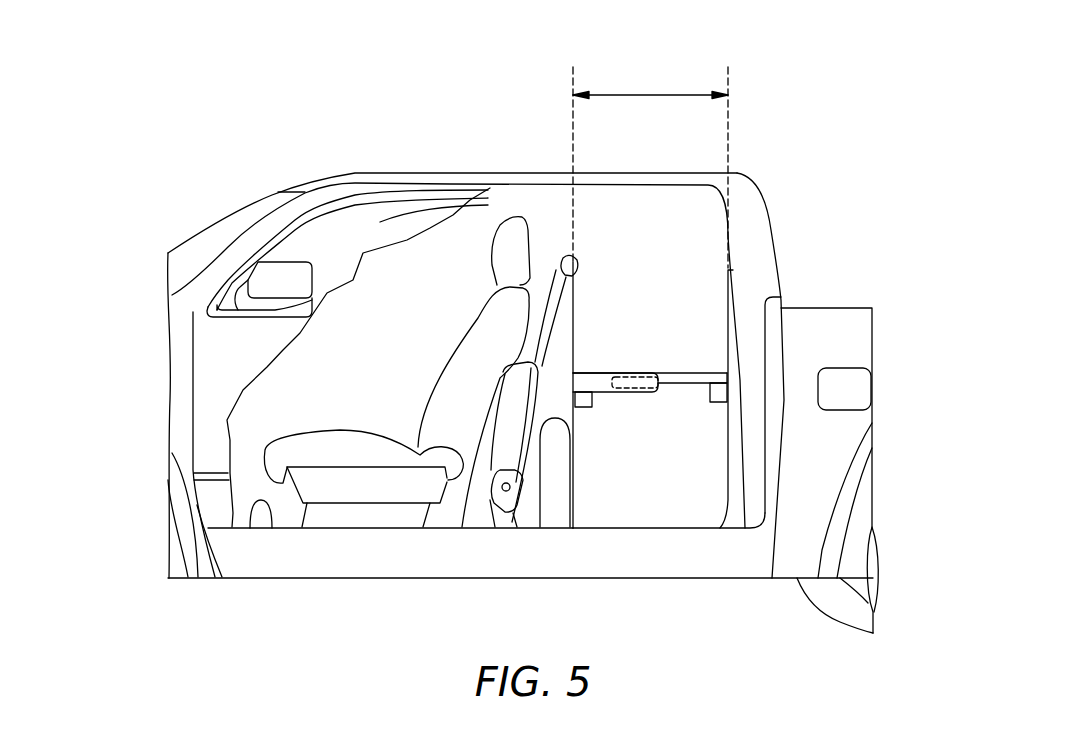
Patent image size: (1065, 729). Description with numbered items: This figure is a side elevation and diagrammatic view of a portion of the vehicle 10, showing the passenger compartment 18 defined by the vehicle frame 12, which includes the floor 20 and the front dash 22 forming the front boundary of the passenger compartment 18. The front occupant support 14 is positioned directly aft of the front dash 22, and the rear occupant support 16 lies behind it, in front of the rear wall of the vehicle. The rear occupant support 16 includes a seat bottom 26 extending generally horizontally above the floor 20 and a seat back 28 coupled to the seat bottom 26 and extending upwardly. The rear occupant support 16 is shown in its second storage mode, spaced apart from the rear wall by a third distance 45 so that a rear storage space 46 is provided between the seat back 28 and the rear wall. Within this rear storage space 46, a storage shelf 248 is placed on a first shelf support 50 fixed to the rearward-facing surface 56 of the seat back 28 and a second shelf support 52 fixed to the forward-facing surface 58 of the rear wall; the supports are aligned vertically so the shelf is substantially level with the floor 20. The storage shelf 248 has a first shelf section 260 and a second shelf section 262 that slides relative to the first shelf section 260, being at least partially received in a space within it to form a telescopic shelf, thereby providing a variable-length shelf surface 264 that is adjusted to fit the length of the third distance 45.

The vehicle 10 is at (120, 152).
The vehicle frame 12 is at (362, 168).
The front occupant support 14 is at (416, 352).
The rear occupant support 16 is at (545, 240).
The passenger compartment 18 is at (498, 190).
The floor 20 is at (251, 528).
The front dash 22 is at (255, 368).
The seat bottom 26 is at (484, 487).
The seat back 28 is at (594, 246).
The third distance 45 is at (652, 93).
The rear storage space 46 is at (634, 512).
The first shelf support 50 is at (588, 434).
The second shelf support 52 is at (710, 427).
The rearward-facing surface 56 is at (574, 300).
The forward-facing surface 58 is at (728, 298).
The storage shelf 248 is at (651, 350).
The first shelf section 260 is at (627, 418).
The second shelf section 262 is at (677, 415).
The variable-length shelf surface 264 is at (614, 350).